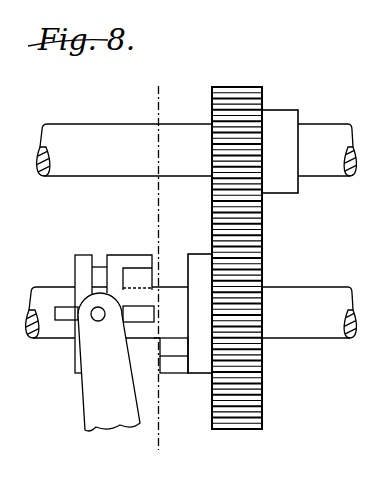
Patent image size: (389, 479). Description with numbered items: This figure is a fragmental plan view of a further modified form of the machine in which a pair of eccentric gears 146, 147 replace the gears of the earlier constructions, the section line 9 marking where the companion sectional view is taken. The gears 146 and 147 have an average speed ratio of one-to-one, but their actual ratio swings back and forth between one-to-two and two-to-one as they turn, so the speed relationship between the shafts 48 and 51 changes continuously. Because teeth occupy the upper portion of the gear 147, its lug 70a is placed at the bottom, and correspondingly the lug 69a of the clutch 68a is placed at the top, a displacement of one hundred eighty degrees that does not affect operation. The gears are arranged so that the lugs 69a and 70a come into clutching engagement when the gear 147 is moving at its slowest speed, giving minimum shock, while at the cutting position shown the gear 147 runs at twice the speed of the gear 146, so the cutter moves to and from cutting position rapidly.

The shaft 48 is at (122, 124).
The shaft 51 is at (328, 338).
The eccentric gear 146 is at (242, 87).
The eccentric gear 147 is at (241, 430).
The clutch 68a is at (75, 268).
The lug 69a is at (145, 255).
The lug 70a is at (172, 366).
The section line 9- 9 is at (158, 88).